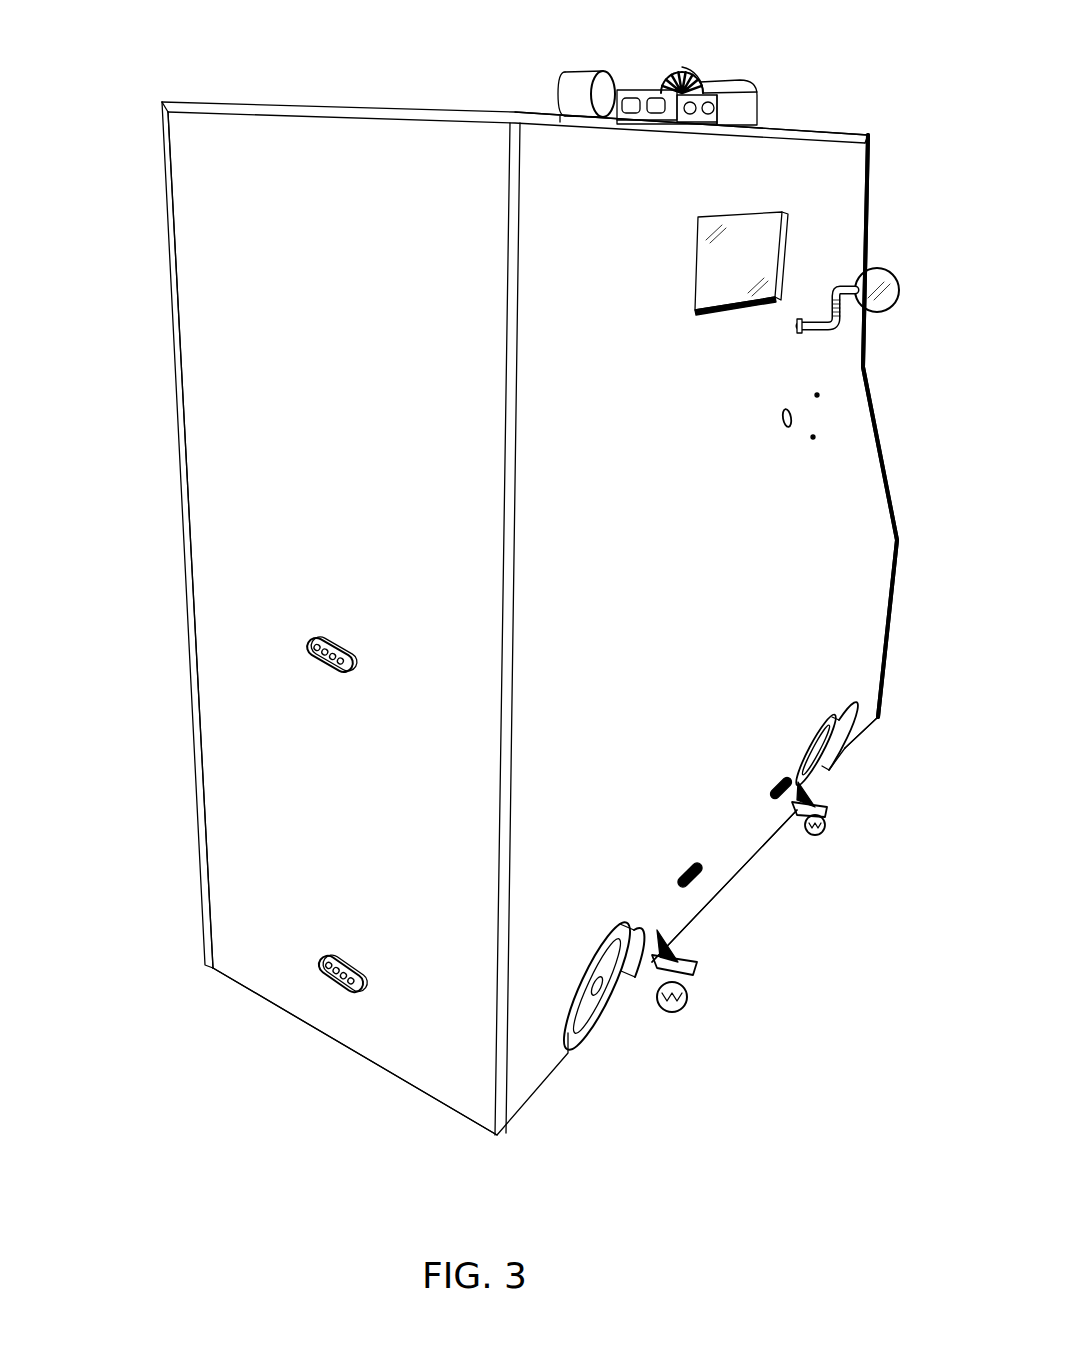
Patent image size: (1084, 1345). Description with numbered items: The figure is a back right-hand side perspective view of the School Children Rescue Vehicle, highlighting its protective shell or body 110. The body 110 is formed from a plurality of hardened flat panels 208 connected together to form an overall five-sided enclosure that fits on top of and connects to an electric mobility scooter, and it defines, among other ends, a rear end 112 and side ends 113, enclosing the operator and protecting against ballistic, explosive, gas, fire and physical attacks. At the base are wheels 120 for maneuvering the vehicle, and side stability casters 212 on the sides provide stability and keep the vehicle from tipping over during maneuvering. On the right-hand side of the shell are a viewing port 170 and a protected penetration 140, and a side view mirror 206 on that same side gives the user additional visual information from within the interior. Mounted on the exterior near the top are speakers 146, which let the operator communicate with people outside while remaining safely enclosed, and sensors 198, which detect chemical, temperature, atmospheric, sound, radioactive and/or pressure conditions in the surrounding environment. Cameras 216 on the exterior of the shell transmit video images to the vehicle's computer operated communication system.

The body 110 is at (125, 55).
The rear end 112 is at (217, 883).
The side end 113 is at (855, 663).
The wheel 120 is at (602, 1018).
The protected penetration 140 is at (793, 423).
The speaker 146 is at (730, 82).
The viewing port 170 is at (768, 212).
The sensor 198 is at (630, 90).
The side view mirror 206 is at (880, 268).
The hardened flat panel 208 is at (213, 768).
The side stability caster 212 is at (832, 810).
The camera 216 is at (307, 650).